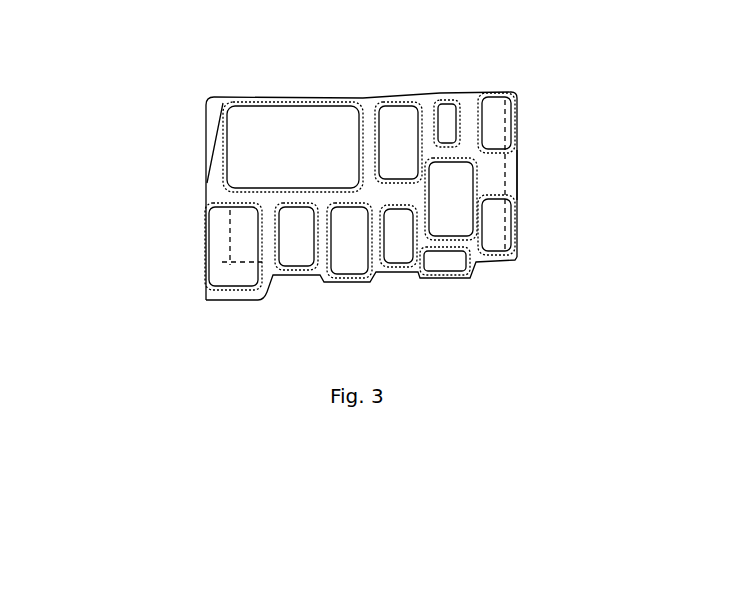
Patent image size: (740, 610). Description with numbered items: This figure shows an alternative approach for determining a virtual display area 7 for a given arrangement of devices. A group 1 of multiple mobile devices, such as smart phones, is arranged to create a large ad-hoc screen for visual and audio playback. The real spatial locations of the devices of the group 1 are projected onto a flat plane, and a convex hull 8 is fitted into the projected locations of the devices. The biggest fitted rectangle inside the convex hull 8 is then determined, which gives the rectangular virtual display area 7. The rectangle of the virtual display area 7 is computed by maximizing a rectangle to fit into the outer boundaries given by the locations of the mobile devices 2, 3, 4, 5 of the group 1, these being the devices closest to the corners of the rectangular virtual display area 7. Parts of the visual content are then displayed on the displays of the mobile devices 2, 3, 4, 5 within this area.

The group of multiple devices 1 is at (150, 250).
The mobile device 2 is at (258, 123).
The mobile device 3 is at (513, 98).
The mobile device 4 is at (505, 245).
The mobile device 5 is at (207, 303).
The virtual display area 7 is at (508, 186).
The convex hull 8 is at (523, 157).